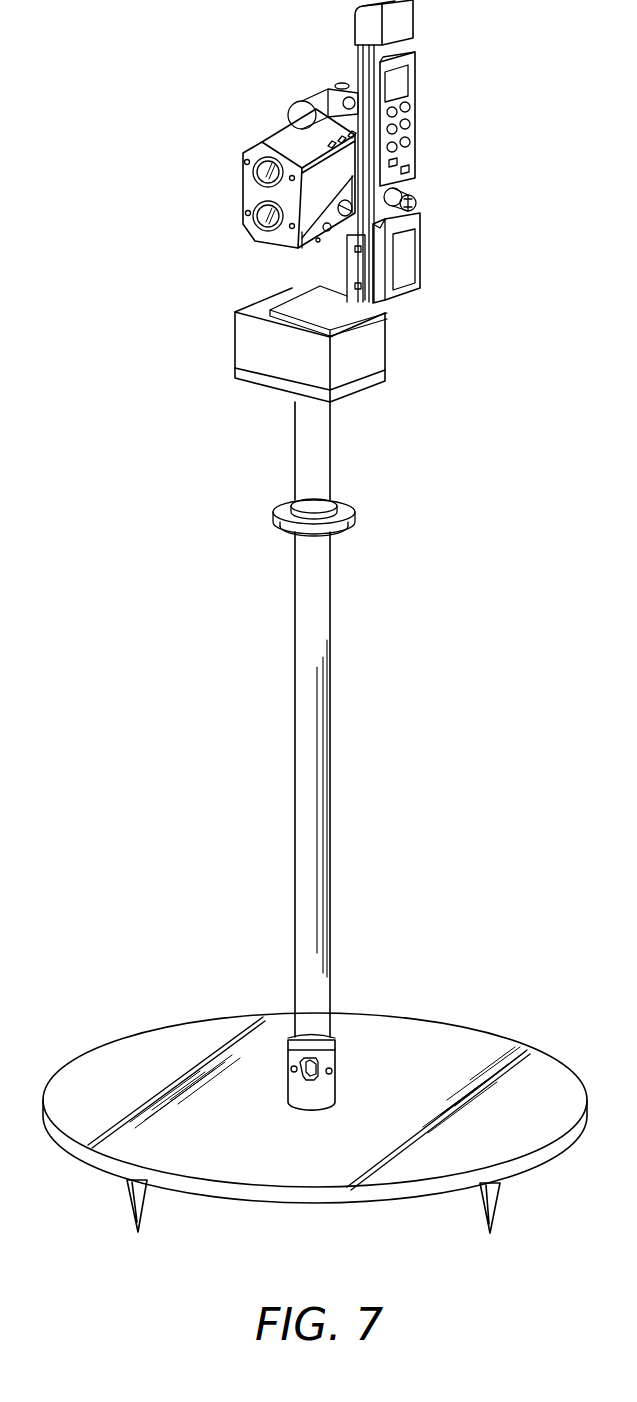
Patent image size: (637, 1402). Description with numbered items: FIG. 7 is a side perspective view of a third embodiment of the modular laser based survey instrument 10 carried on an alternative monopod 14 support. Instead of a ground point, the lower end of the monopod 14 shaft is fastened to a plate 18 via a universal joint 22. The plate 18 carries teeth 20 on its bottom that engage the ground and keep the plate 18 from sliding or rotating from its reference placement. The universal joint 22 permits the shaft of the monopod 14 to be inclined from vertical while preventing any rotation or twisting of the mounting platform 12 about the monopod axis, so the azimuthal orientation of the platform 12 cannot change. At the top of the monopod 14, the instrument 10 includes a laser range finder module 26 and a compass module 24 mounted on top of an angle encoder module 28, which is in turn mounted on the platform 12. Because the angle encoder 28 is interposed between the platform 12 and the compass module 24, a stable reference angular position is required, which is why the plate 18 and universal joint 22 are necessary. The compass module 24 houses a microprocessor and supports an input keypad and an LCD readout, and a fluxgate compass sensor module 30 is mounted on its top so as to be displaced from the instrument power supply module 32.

The instrument 10 is at (168, 266).
The mounting platform 12 is at (270, 381).
The monopod 14 is at (295, 715).
The plate 18 is at (173, 1043).
The teeth 20 is at (127, 1197).
The universal joint 22 is at (337, 1072).
The compass module 24 is at (410, 154).
The laser range finder module 26 is at (278, 140).
The angle encoder module 28 is at (247, 335).
The fluxgate compass sensor module 30 is at (410, 21).
The instrument power supply module 32 is at (405, 278).